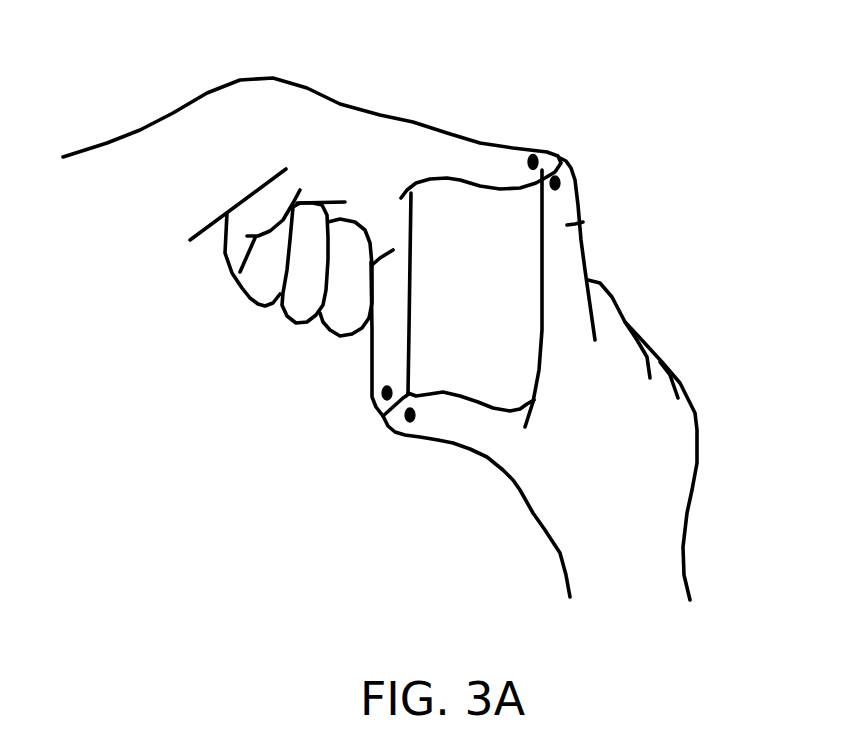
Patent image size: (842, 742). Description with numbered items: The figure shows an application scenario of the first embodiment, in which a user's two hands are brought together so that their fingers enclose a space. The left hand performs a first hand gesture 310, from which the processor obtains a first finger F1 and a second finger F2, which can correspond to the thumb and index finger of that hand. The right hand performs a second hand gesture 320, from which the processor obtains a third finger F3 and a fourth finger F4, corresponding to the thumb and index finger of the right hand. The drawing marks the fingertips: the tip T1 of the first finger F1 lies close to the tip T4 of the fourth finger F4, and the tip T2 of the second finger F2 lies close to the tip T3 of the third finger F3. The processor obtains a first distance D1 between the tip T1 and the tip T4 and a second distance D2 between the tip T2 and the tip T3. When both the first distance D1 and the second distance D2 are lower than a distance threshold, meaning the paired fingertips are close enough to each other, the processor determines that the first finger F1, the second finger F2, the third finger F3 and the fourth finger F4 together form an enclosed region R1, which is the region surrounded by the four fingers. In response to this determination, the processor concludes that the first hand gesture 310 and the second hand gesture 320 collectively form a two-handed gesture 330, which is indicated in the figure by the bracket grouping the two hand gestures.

The first hand gesture 310 is at (312, 214).
The second hand gesture 320 is at (551, 341).
The two-handed gesture 330 is at (112, 93).
The first finger F1 is at (312, 129).
The second finger F2 is at (354, 304).
The third finger F3 is at (476, 494).
The fourth finger F4 is at (589, 292).
The tip of the first finger T1 is at (532, 115).
The tip of the second finger T2 is at (354, 405).
The tip of the third finger T3 is at (407, 453).
The tip of the fourth finger T4 is at (576, 136).
The first distance D1 is at (506, 231).
The second distance D2 is at (433, 343).
The enclosed region R1 is at (503, 460).